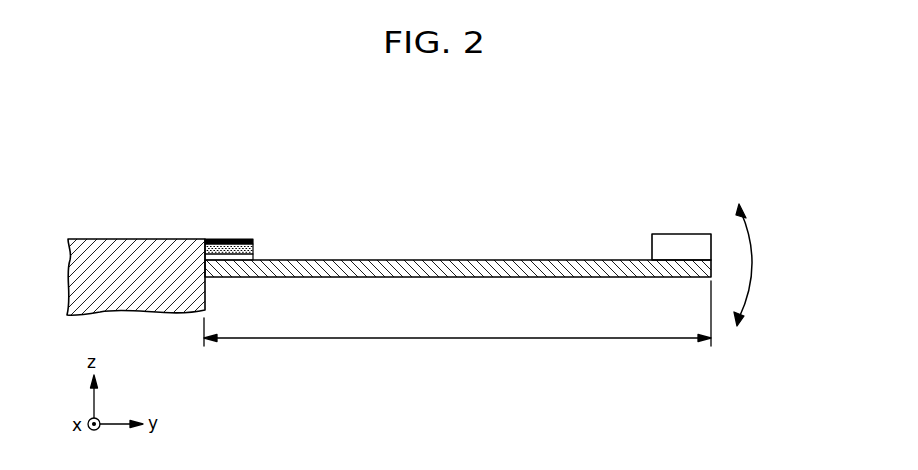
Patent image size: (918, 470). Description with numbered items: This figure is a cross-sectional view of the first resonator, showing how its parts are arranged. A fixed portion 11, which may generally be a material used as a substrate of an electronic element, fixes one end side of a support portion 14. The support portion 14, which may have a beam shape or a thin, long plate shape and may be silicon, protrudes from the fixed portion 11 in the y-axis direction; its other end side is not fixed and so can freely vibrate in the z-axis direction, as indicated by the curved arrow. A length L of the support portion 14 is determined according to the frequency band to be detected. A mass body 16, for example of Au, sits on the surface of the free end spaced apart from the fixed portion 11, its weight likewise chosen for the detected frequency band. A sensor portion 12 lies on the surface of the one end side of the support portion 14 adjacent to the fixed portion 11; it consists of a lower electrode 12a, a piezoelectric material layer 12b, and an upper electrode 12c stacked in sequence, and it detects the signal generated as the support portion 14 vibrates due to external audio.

The fixed portion 11 is at (167, 240).
The sensor portion 12 is at (278, 229).
The lower electrode 12a is at (255, 257).
The piezoelectric material layer 12b is at (255, 249).
The upper electrode 12c is at (255, 240).
The support portion 14 is at (453, 261).
The mass body 16 is at (682, 238).
The length of the support portion L is at (457, 313).